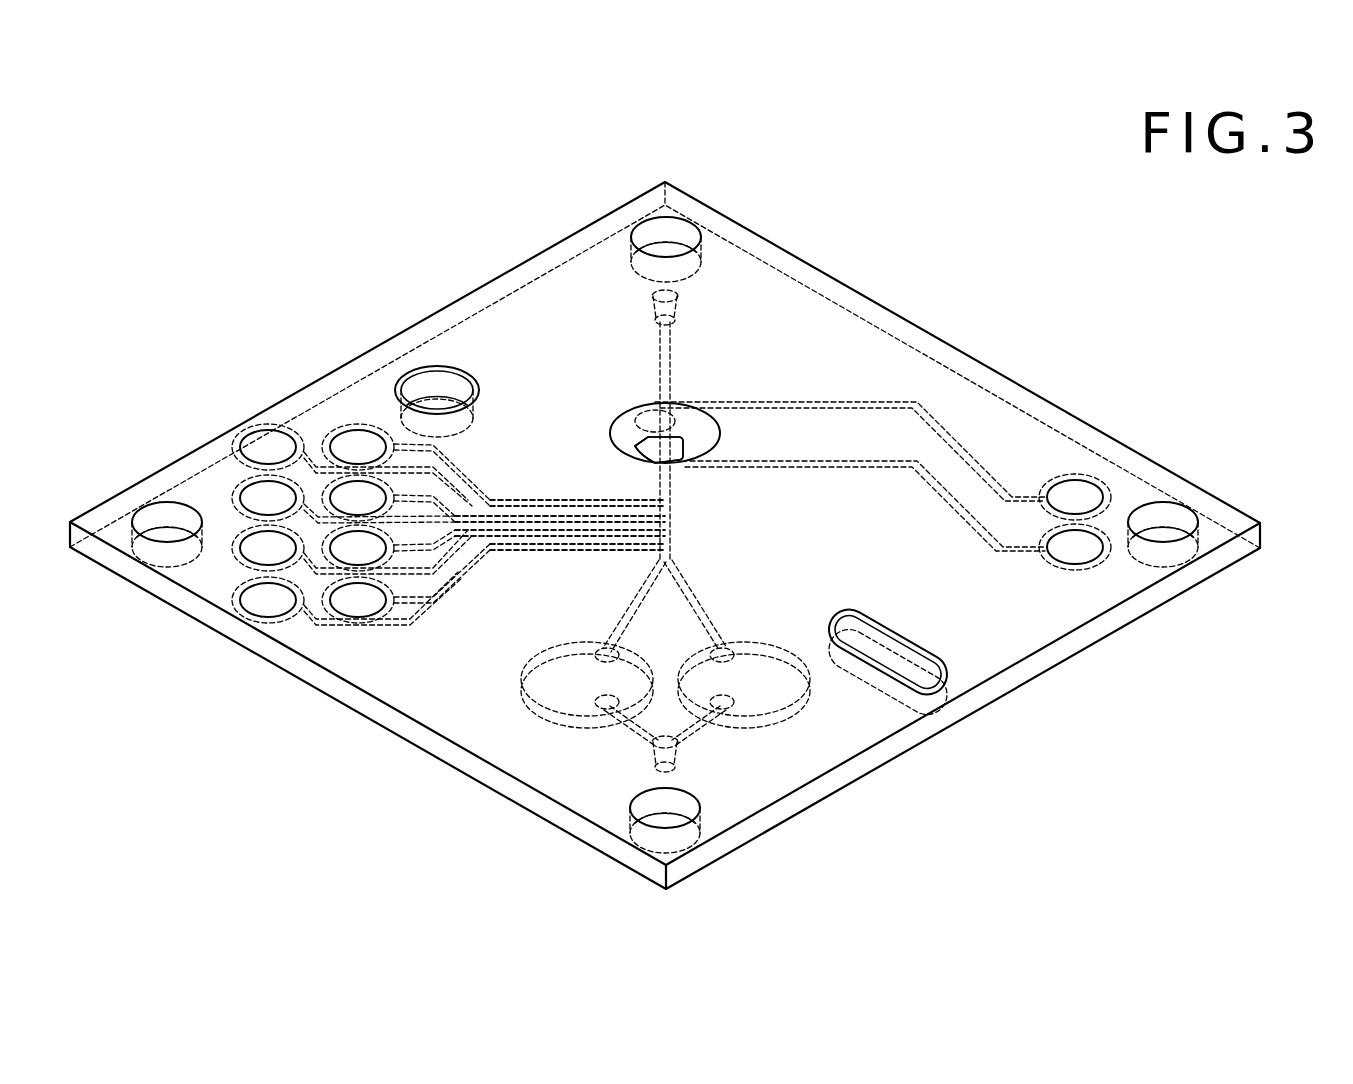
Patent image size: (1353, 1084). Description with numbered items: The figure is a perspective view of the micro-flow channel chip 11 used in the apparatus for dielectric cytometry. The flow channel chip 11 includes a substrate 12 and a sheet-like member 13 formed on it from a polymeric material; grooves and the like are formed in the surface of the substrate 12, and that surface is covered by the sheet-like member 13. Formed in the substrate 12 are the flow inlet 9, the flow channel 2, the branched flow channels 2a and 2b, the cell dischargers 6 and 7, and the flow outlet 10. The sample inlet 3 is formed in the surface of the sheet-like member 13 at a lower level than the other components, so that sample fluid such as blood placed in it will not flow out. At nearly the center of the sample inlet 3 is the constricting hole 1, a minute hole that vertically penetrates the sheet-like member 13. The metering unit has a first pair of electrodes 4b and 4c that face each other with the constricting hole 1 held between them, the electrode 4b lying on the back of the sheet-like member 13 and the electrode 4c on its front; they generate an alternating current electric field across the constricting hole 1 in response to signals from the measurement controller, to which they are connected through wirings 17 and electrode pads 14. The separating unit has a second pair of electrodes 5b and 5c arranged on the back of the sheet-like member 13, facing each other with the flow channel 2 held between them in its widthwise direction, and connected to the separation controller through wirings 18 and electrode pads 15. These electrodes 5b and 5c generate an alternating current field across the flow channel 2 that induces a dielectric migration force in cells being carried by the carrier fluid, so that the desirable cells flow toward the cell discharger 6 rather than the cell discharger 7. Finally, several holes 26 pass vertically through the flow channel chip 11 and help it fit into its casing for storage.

The constricting hole 1 is at (690, 432).
The flow channel 2 is at (672, 388).
The branched flow channel 2a is at (700, 614).
The branched flow channel 2b is at (632, 613).
The sample inlet 3 is at (705, 431).
The electrode 4b is at (622, 428).
The electrode 4c is at (636, 443).
The electrode 5b is at (685, 515).
The electrode 5c is at (560, 525).
The cell discharger 6 is at (810, 693).
The cell discharger 7 is at (525, 690).
The flow inlet 9 is at (681, 297).
The flow outlet 10 is at (660, 745).
The micro-flow channel chip 11 is at (665, 535).
The substrate 12 is at (322, 686).
The sheet-like member 13 is at (389, 712).
The electrode pad 14 is at (1072, 547).
The electrode pad 15 is at (352, 498).
The wiring 17 is at (985, 500).
The wiring 18 is at (487, 530).
The hole 26 is at (648, 233).